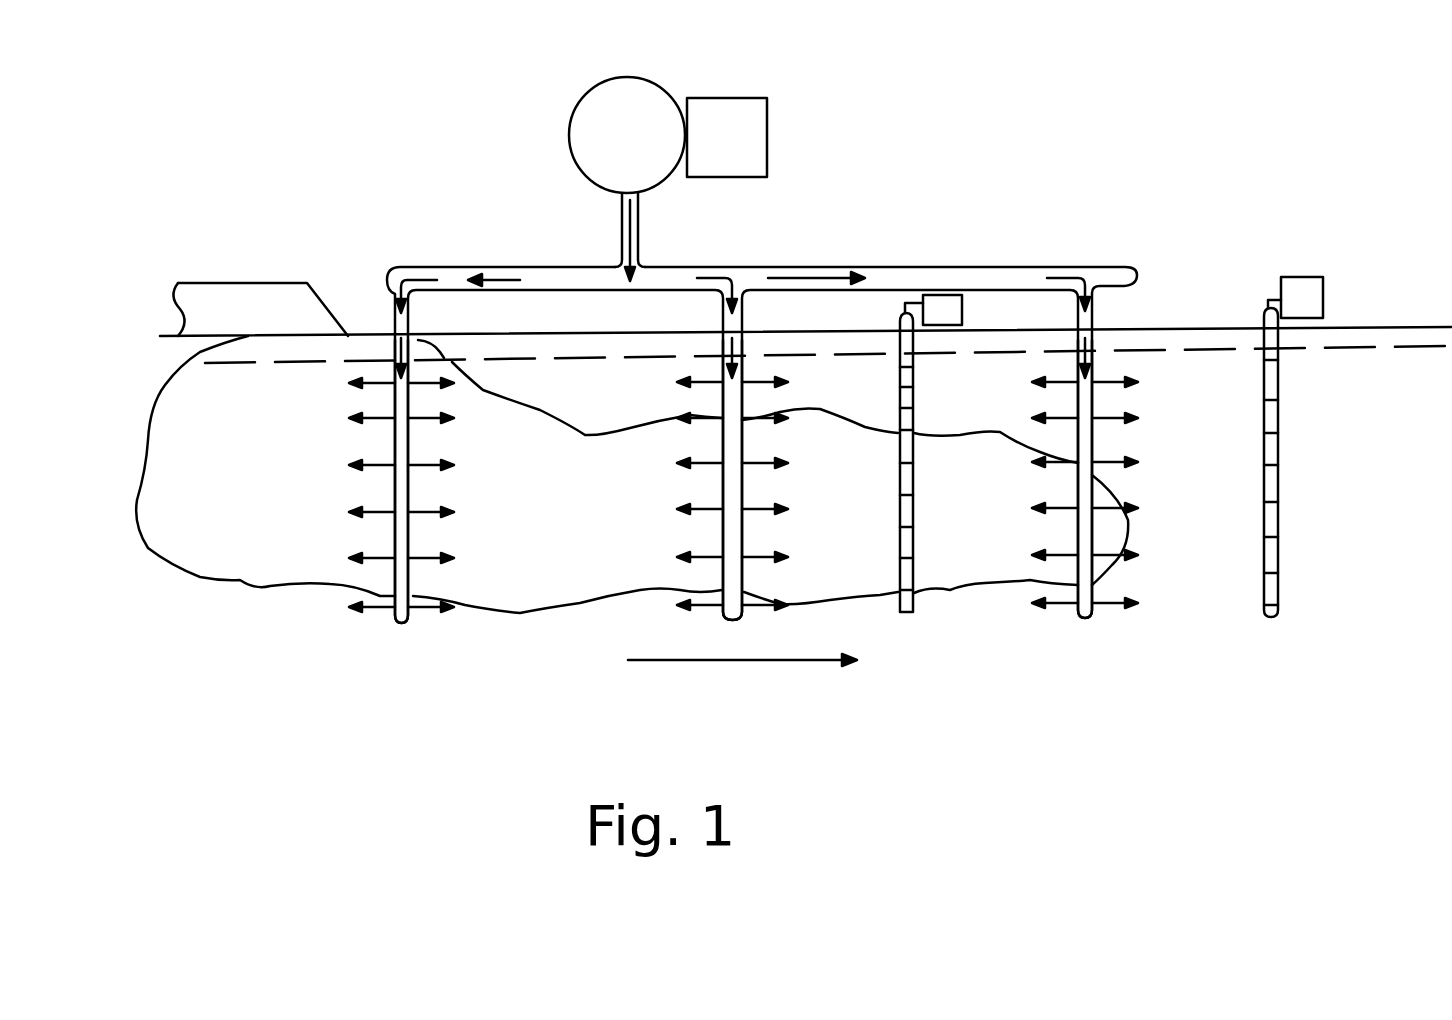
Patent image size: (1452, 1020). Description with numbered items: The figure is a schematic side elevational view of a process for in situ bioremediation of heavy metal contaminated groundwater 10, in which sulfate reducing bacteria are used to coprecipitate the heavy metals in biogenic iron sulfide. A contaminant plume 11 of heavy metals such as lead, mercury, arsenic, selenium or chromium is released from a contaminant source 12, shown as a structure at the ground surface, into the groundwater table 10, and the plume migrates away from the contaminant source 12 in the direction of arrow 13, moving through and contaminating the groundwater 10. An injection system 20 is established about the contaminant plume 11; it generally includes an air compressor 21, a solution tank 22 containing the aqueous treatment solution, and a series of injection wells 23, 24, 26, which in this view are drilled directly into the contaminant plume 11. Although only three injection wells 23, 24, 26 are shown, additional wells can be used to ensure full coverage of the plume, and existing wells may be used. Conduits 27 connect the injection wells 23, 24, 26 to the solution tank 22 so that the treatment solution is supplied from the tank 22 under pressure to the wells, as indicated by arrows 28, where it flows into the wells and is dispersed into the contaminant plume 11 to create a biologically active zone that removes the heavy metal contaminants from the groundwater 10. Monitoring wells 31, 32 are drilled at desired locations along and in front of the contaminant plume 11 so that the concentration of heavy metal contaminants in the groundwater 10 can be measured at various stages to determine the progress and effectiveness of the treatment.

The groundwater 10 is at (1195, 388).
The contaminant plume 11 is at (543, 563).
The contaminant source 12 is at (275, 305).
The arrow 13 is at (716, 662).
The injection system 20 is at (912, 233).
The air compressor 21 is at (743, 149).
The solution tank 22 is at (643, 149).
The injection well 23 is at (400, 624).
The injection well 24 is at (733, 622).
The injection well 26 is at (1083, 620).
The conduits 27 is at (638, 252).
The arrows 28 is at (430, 553).
The monitoring well 31 is at (1272, 618).
The monitoring well 32 is at (911, 613).